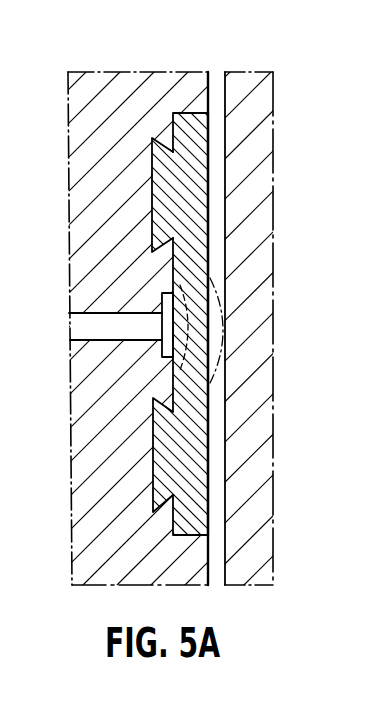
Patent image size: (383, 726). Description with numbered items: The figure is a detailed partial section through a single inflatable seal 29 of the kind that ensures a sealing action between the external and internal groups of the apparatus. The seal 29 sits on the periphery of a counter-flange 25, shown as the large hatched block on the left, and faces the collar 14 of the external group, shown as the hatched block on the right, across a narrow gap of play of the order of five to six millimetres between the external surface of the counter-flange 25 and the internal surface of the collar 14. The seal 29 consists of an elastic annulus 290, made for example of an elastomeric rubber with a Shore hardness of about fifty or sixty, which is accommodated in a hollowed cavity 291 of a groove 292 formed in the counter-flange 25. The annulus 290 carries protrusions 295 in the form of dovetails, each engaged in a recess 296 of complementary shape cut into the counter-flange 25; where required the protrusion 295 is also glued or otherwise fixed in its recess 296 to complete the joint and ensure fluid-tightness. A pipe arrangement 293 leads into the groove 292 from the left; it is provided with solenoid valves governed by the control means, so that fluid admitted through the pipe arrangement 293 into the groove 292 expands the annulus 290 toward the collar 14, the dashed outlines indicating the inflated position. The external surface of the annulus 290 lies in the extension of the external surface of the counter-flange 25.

The collar 14 is at (238, 127).
The counter-flange 25 is at (85, 98).
The seal 29 is at (178, 71).
The elastic annulus 290 is at (188, 115).
The hollowed cavity 291 is at (188, 535).
The groove 292 is at (163, 297).
The pipe arrangement 293 is at (112, 327).
The protrusion 295 is at (158, 195).
The recess 296 is at (153, 137).